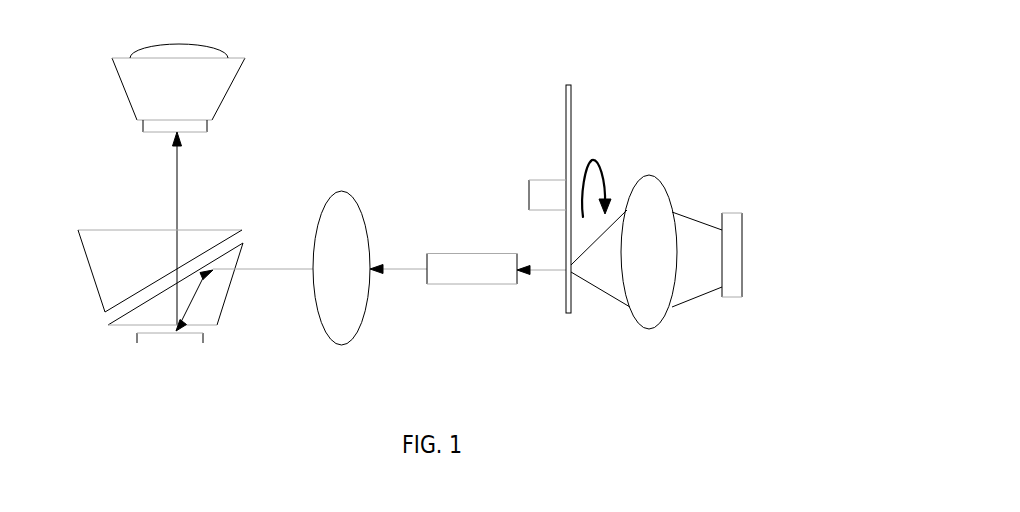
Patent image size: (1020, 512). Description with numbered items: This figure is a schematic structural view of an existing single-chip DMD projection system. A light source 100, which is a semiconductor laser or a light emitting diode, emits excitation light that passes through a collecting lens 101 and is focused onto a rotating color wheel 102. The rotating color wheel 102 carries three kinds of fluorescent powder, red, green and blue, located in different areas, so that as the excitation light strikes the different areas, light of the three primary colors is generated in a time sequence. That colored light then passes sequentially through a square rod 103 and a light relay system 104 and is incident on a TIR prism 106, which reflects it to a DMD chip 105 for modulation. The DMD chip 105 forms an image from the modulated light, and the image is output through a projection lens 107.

The light source 100 is at (737, 251).
The collecting lens 101 is at (642, 190).
The rotating color wheel 102 is at (567, 84).
The square rod 103 is at (481, 279).
The light relay system 104 is at (338, 195).
The DMD chip 105 is at (160, 345).
The TIR prism 106 is at (113, 232).
The projection lens 107 is at (138, 107).